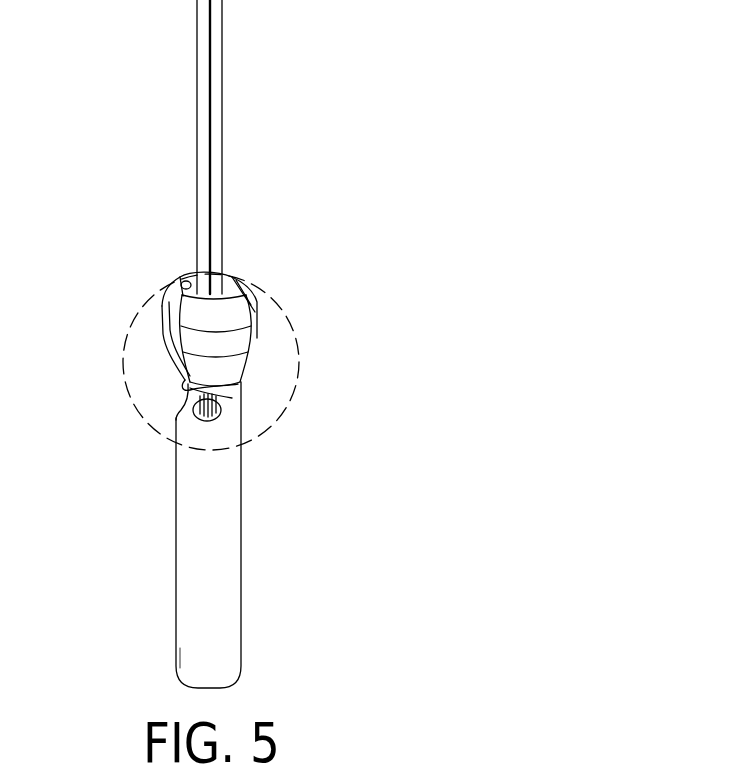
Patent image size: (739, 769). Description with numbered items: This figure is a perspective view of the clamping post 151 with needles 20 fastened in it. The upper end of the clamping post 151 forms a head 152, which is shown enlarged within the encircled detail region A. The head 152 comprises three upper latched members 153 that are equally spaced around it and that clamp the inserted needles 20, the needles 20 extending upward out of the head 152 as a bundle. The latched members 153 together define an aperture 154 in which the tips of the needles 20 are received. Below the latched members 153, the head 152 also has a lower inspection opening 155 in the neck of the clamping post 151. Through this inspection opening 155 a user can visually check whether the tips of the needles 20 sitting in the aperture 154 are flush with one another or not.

The needles 20 is at (215, 117).
The detail region A is at (294, 330).
The clamping post 151 is at (230, 505).
The head 152 is at (158, 263).
The upper latched members 153 is at (228, 313).
The aperture 154 is at (224, 431).
The lower inspection opening 155 is at (177, 418).